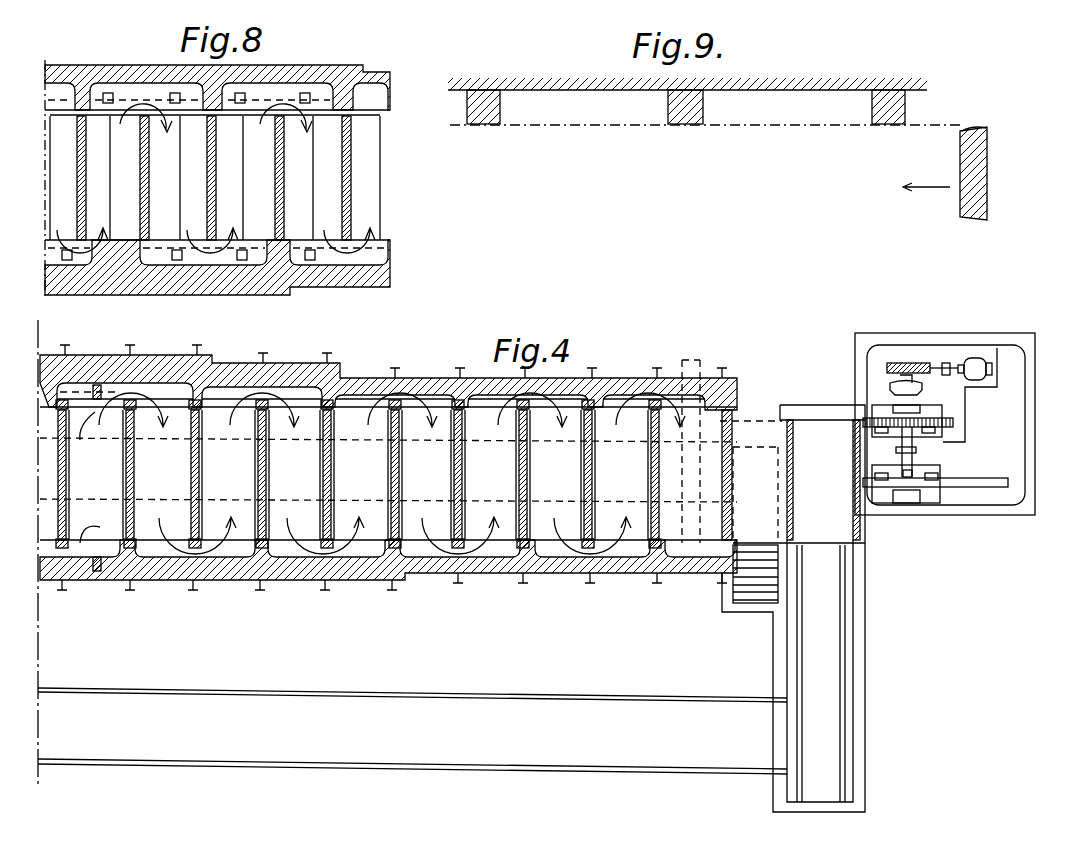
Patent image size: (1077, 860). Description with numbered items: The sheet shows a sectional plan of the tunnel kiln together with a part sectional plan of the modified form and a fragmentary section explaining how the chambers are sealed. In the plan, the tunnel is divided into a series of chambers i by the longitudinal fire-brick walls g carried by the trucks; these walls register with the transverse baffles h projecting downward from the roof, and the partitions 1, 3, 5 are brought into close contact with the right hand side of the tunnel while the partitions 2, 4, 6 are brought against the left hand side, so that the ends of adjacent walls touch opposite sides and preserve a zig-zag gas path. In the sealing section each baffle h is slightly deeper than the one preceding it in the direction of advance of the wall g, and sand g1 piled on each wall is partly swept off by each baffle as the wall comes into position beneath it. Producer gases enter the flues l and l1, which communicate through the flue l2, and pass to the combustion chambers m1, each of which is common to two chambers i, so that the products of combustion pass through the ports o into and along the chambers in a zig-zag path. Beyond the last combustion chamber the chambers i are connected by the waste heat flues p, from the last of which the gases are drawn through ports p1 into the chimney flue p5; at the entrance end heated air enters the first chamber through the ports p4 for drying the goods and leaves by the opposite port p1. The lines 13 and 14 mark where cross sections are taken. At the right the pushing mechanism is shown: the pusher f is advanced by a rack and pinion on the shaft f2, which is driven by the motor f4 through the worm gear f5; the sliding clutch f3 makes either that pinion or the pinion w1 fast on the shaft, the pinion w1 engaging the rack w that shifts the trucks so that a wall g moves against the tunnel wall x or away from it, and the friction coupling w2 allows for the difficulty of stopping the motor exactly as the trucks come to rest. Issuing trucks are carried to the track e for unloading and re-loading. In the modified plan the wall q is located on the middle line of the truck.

In FIG. 8, the flue l is at (100, 100).
In FIG. 4, the flue l is at (85, 372).
In FIG. 8, the flue l1 is at (95, 258).
In FIG. 4, the connecting flue l2 is at (97, 550).
In FIG. 8, the chamber i is at (215, 178).
In FIG. 4, the chamber i is at (52, 465).
In FIG. 8, the partition q is at (284, 180).
In FIG. 8, the fire-brick wall g is at (348, 192).
In FIG. 9, the fire-brick wall g is at (988, 200).
In FIG. 4, the fire-brick wall g is at (200, 467).
In FIG. 9, the sand g1 is at (982, 130).
In FIG. 9, the baffle h is at (483, 117).
In FIG. 4, the combustion chamber m1 is at (163, 372).
In FIG. 4, the waste heat flue p is at (307, 373).
In FIG. 4, the port p1 is at (708, 397).
In FIG. 4, the port p4 is at (483, 397).
In FIG. 4, the chimney flue p5 is at (700, 483).
In FIG. 4, the port o is at (100, 411).
In FIG. 4, the wall of the tunnel x is at (278, 552).
In FIG. 4, the section line 13 is at (423, 376).
In FIG. 4, the section line 14 is at (707, 610).
In FIG. 4, the partition 1 is at (621, 475).
In FIG. 4, the partition 2 is at (555, 475).
In FIG. 4, the partition 3 is at (490, 475).
In FIG. 4, the partition 4 is at (398, 506).
In FIG. 4, the partition 5 is at (361, 475).
In FIG. 4, the partition 6 is at (294, 475).
In FIG. 4, the rack w is at (952, 417).
In FIG. 4, the pinion w1 is at (900, 423).
In FIG. 4, the friction coupling w2 is at (890, 368).
In FIG. 4, the pusher f is at (973, 482).
In FIG. 4, the shaft f2 is at (912, 460).
In FIG. 4, the sliding clutch f3 is at (912, 455).
In FIG. 4, the motor f4 is at (977, 360).
In FIG. 4, the worm gear f5 is at (922, 366).
In FIG. 4, the track e is at (538, 765).